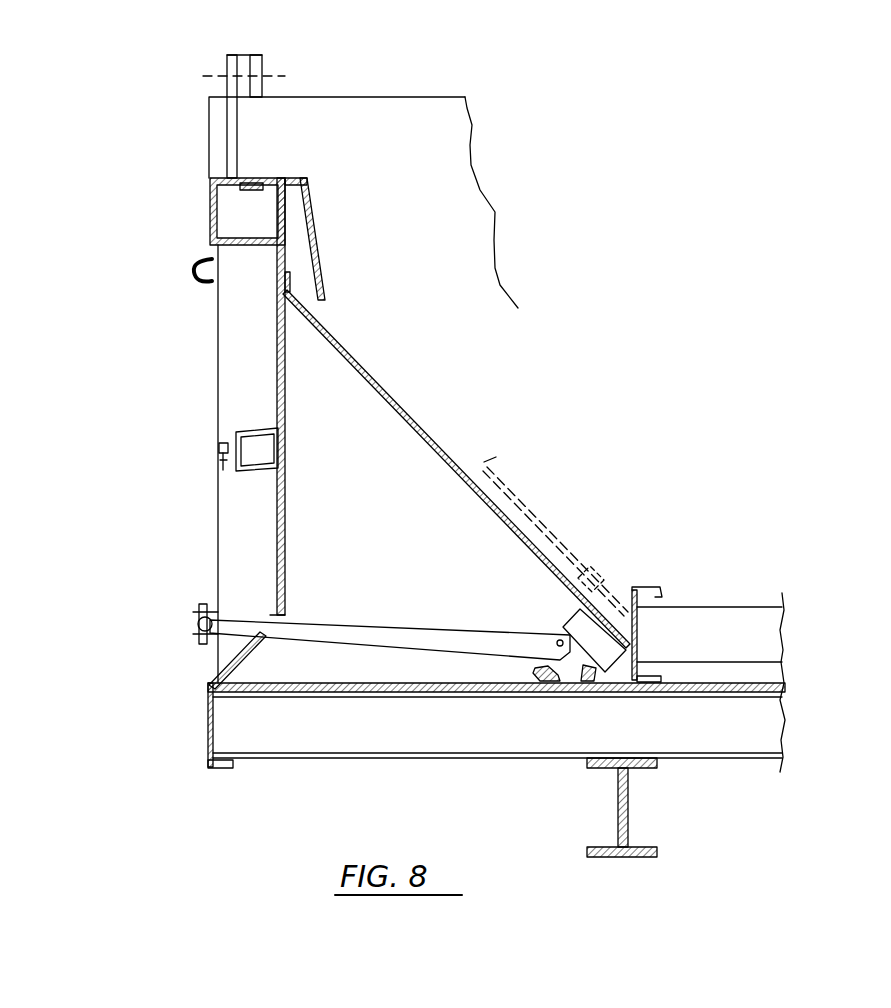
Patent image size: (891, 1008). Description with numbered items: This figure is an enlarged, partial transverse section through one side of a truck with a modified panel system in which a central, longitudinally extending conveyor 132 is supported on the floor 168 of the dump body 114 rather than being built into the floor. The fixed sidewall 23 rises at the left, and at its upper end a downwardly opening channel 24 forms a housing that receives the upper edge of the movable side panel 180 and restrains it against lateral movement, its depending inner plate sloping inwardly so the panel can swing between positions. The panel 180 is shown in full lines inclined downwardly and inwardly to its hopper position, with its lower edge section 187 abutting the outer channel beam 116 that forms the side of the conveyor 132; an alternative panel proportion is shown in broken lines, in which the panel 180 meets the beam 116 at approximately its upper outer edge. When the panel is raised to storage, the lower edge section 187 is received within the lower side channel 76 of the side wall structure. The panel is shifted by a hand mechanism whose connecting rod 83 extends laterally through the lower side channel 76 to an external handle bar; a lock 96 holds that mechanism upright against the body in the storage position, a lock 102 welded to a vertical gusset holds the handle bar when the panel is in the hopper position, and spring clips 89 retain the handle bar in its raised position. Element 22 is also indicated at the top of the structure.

The frame member 22 is at (380, 97).
The dump body 114 is at (450, 158).
The sidewall 23 is at (277, 338).
The channel 24 is at (323, 239).
The spring clips 89 is at (201, 258).
The lock 96 is at (245, 432).
The side panel 180 is at (372, 378).
The lower edge section 187 is at (566, 672).
The channel beam 116 is at (641, 590).
The conveyor 132 is at (710, 612).
The floor 168 is at (755, 683).
The lower side channel 76 is at (262, 657).
The connecting rod 83 is at (360, 633).
The lock 102 is at (197, 638).